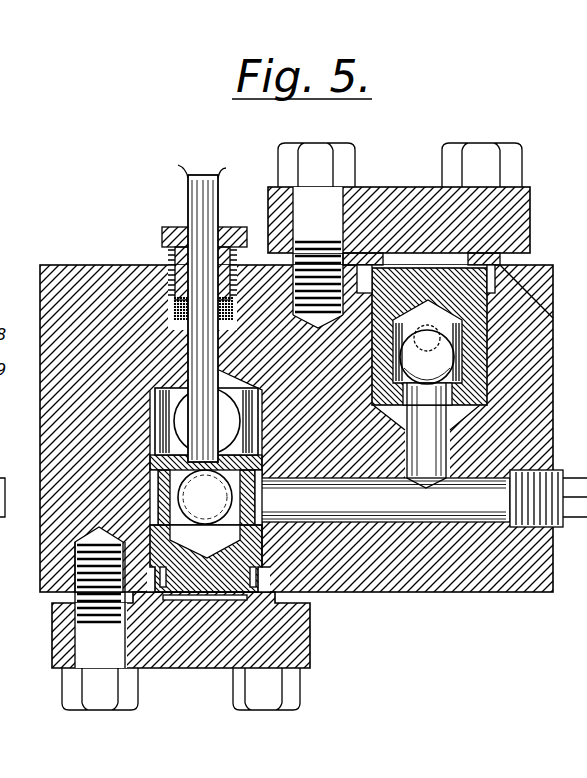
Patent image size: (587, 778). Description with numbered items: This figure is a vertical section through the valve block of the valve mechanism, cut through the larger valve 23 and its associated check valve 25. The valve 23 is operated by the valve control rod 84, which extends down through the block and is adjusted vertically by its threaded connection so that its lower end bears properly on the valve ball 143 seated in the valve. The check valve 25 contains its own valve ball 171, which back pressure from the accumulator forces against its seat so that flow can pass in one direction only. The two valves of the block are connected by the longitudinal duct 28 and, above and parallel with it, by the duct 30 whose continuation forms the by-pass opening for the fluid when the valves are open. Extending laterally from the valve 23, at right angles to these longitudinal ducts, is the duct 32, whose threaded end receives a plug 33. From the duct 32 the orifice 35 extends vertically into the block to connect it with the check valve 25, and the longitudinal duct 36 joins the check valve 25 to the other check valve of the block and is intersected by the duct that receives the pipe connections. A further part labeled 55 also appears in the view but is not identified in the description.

The valve control rod 84 is at (204, 303).
The valve 23 is at (185, 392).
The check valve 25 is at (532, 267).
The valve ball 171 is at (433, 365).
The longitudinal duct 36 is at (483, 383).
The plug 33 is at (570, 477).
The duct 32 is at (377, 523).
The orifice 35 is at (428, 480).
The duct 30 is at (166, 436).
The valve ball 143 is at (182, 497).
The longitudinal duct 28 is at (150, 535).
The bracket 55 is at (0, 466).